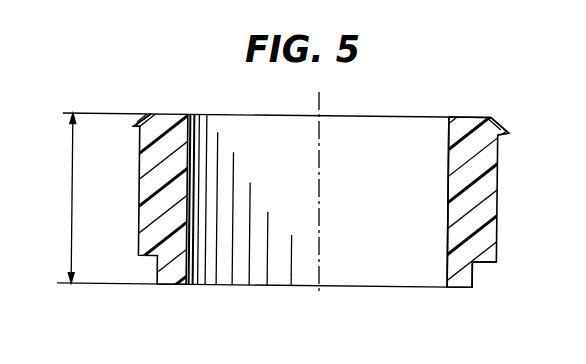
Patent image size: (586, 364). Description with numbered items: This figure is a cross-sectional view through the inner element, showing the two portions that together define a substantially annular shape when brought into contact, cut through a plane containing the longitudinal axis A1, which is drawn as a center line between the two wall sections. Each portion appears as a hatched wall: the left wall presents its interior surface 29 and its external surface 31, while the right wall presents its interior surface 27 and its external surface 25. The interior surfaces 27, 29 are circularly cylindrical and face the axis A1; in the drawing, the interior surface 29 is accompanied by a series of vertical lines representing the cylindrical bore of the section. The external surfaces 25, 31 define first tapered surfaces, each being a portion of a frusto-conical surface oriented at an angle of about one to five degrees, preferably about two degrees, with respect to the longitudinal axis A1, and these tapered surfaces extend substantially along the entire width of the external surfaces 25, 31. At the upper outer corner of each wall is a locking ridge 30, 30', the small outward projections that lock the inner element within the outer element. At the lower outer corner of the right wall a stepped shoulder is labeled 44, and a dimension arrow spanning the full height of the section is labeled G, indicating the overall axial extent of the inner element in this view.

The external surface 25 is at (498, 198).
The interior surface 27 is at (448, 170).
The interior surface 29 is at (187, 190).
The locking ridge 30 is at (519, 106).
The locking ridge 30' is at (131, 97).
The external surface 31 is at (138, 185).
The foot / shoulder 44 is at (475, 278).
The longitudinal axis A1 is at (320, 100).
The height dimension G is at (66, 198).